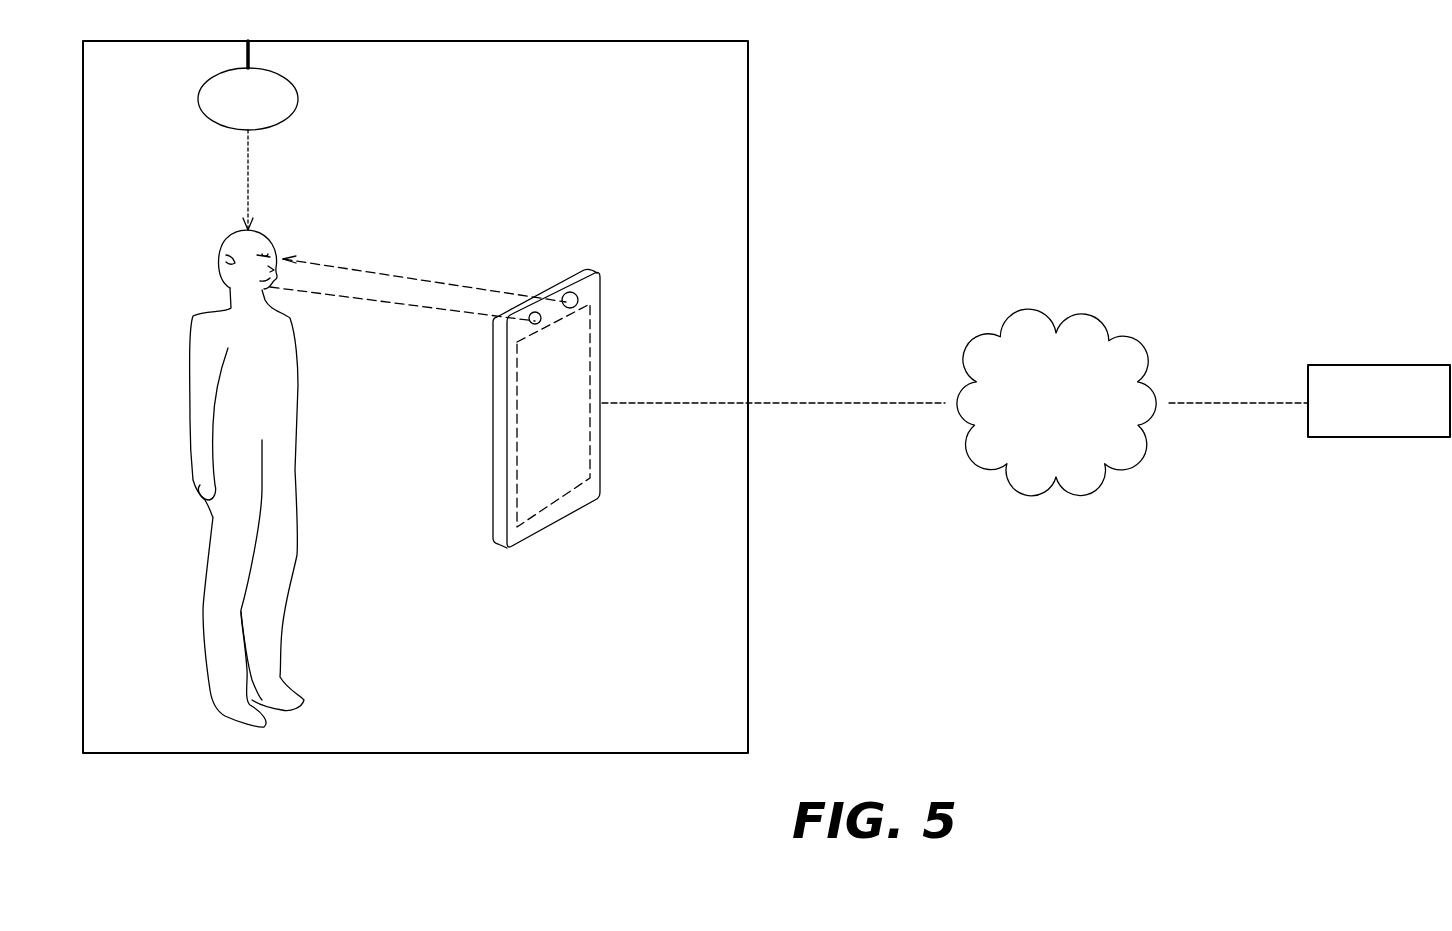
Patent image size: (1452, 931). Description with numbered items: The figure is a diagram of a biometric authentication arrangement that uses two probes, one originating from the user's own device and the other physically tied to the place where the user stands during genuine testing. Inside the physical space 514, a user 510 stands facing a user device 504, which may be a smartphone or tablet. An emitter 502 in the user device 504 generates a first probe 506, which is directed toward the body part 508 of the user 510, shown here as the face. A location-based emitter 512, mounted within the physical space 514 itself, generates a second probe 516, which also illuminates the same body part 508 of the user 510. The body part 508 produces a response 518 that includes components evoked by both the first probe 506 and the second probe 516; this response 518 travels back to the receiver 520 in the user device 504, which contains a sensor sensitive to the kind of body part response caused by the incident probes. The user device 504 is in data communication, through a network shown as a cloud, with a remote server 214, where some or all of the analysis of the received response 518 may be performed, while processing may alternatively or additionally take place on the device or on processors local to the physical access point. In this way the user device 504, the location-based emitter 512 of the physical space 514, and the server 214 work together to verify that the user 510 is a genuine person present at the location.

The server 214 is at (1332, 365).
The emitter 502 is at (582, 278).
The user device 504 is at (609, 379).
The probe 1 506 is at (352, 266).
The body part 508 is at (258, 268).
The user 510 is at (200, 458).
The location-based emitter 512 is at (297, 93).
The physical space 514 is at (750, 132).
The probe 2 516 is at (248, 178).
The response 518 is at (360, 294).
The receiver 520 is at (545, 322).